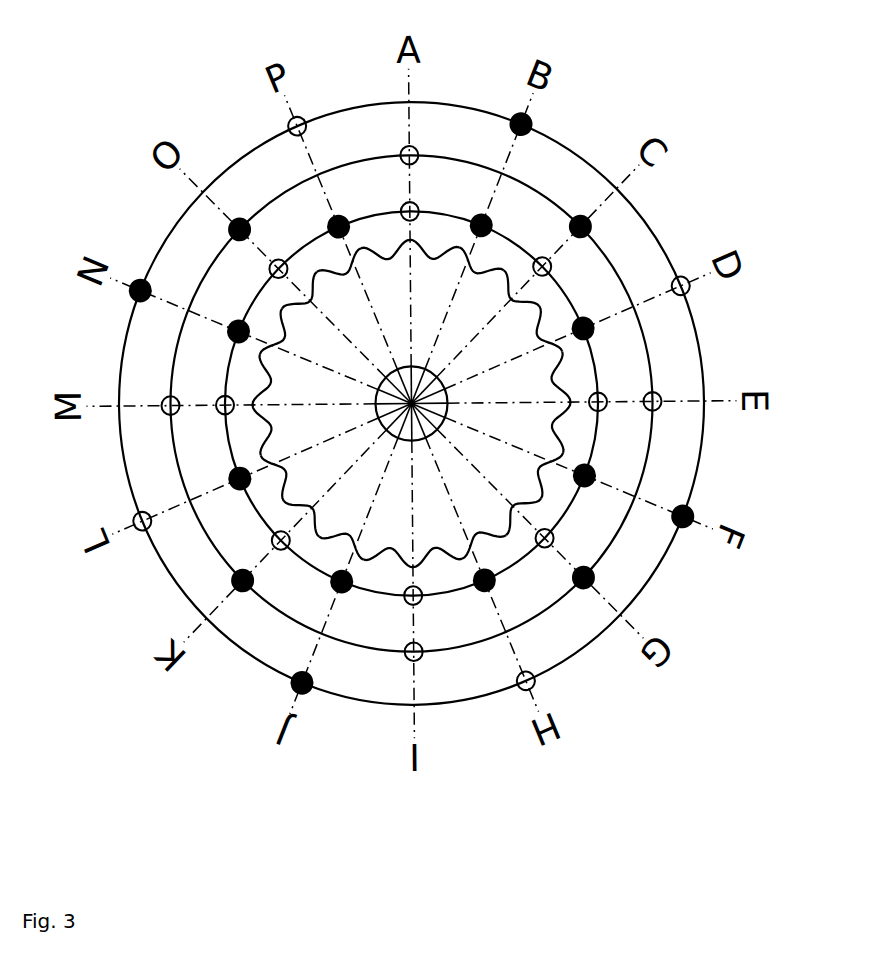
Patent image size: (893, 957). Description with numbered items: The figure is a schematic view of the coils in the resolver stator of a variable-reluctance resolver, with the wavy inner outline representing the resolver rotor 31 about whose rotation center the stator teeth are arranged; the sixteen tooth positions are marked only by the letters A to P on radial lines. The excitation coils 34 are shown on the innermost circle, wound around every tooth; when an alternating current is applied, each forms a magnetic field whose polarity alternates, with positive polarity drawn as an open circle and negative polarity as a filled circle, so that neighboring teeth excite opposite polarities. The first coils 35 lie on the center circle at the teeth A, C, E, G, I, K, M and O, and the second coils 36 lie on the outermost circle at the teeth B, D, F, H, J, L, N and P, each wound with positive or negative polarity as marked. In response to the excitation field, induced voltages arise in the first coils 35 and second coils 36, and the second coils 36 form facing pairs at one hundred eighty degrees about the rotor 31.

The resolver rotor 31 is at (548, 303).
The excitation coils 34 is at (442, 217).
The first coils 35 is at (533, 188).
The second coils 36 is at (657, 228).